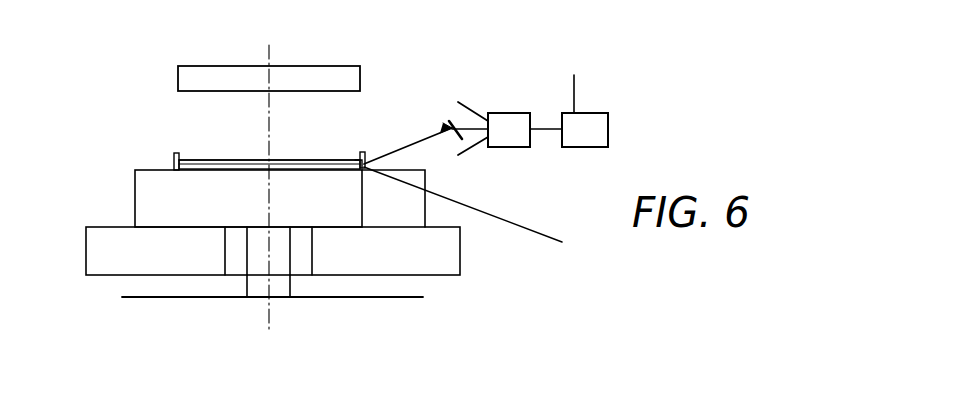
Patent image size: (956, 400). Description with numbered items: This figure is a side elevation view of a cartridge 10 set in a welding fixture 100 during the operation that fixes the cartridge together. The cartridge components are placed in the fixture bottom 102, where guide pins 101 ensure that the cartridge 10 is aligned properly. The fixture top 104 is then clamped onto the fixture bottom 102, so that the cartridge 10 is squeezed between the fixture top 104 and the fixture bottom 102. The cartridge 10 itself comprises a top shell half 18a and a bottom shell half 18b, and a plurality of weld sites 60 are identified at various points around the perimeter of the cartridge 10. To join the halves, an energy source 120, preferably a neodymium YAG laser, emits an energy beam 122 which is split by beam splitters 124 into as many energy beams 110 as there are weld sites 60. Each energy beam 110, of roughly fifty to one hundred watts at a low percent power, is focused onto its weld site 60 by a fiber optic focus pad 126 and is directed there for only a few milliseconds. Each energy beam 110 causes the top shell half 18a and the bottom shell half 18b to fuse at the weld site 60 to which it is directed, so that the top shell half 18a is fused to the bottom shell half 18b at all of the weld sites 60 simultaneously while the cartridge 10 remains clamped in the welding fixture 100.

The cartridge 10 is at (282, 153).
The top cartridge shell half 18a is at (223, 164).
The bottom cartridge shell half 18b is at (233, 172).
The weld site 60 is at (360, 162).
The welding fixture 100 is at (170, 307).
The guide pins 101 is at (175, 153).
The fixture bottom 102 is at (135, 193).
The fixture top 104 is at (177, 80).
The energy beam 110 is at (382, 156).
The energy source 120 is at (585, 130).
The energy beam 122 is at (548, 127).
The beam splitter 124 is at (494, 128).
The fiber optic focus pad 126 is at (452, 125).